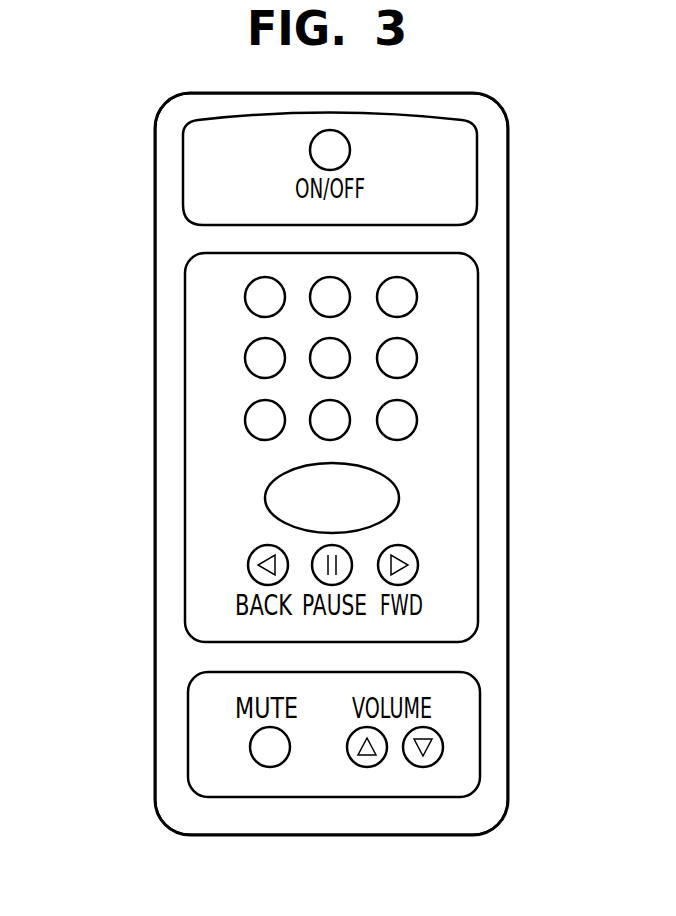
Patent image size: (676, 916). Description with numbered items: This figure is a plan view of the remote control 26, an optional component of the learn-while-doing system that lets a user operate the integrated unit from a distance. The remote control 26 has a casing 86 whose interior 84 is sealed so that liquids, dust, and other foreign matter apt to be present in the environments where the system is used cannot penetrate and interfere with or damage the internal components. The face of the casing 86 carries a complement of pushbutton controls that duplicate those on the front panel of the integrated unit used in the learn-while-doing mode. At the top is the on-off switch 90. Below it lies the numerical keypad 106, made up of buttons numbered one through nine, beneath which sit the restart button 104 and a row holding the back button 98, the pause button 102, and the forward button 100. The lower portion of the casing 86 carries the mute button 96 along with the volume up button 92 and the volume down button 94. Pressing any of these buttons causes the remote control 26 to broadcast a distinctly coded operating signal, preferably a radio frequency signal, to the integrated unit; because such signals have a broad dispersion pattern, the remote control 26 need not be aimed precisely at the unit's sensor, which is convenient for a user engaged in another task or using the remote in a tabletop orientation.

The remote control 26 is at (122, 262).
The casing 86 is at (138, 297).
The on-off switch 90 is at (350, 152).
The interior 84 is at (207, 522).
The numerical keypad 106 is at (230, 391).
The restart button 104 is at (273, 480).
The back button 98 is at (248, 563).
The pause button 102 is at (349, 553).
The forward button 100 is at (418, 561).
The mute button 96 is at (250, 747).
The volume up button 92 is at (367, 767).
The volume down button 94 is at (443, 747).